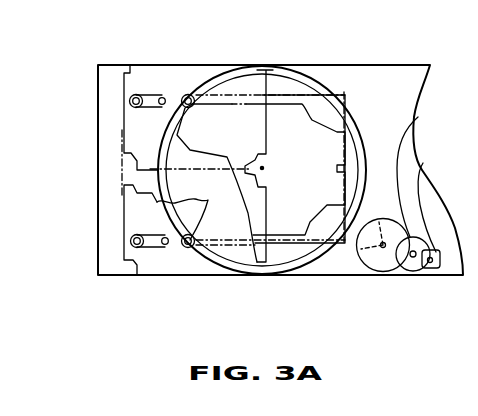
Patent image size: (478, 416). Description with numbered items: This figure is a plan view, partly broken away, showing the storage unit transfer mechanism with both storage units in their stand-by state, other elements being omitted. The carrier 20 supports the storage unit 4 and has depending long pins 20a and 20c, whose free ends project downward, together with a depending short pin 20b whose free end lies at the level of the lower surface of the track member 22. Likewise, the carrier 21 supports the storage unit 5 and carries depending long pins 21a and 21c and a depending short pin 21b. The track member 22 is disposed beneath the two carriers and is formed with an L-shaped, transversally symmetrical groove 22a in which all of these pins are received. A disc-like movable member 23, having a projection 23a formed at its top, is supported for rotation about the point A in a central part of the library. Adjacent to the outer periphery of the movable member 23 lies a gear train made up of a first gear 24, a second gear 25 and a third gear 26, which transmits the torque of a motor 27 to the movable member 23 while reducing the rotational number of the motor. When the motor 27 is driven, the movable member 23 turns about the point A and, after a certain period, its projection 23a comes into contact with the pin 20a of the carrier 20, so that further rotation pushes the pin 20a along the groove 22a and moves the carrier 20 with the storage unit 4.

The storage unit 5 is at (89, 131).
The carrier 21 is at (124, 125).
The storage unit 4 is at (87, 230).
The carrier 20 is at (120, 197).
The long pin 21a is at (190, 94).
The short pin 21b is at (155, 96).
The long pin 21c is at (129, 100).
The long pin 20a is at (190, 248).
The short pin 20b is at (165, 245).
The long pin 20c is at (137, 248).
The track member 22 is at (283, 117).
The groove 22a is at (285, 247).
The movable member 23 is at (343, 123).
The projection 23a is at (157, 202).
The first gear 24 is at (418, 117).
The second gear 25 is at (368, 273).
The third gear 26 is at (343, 247).
The motor 27 is at (423, 163).
The point A is at (262, 168).